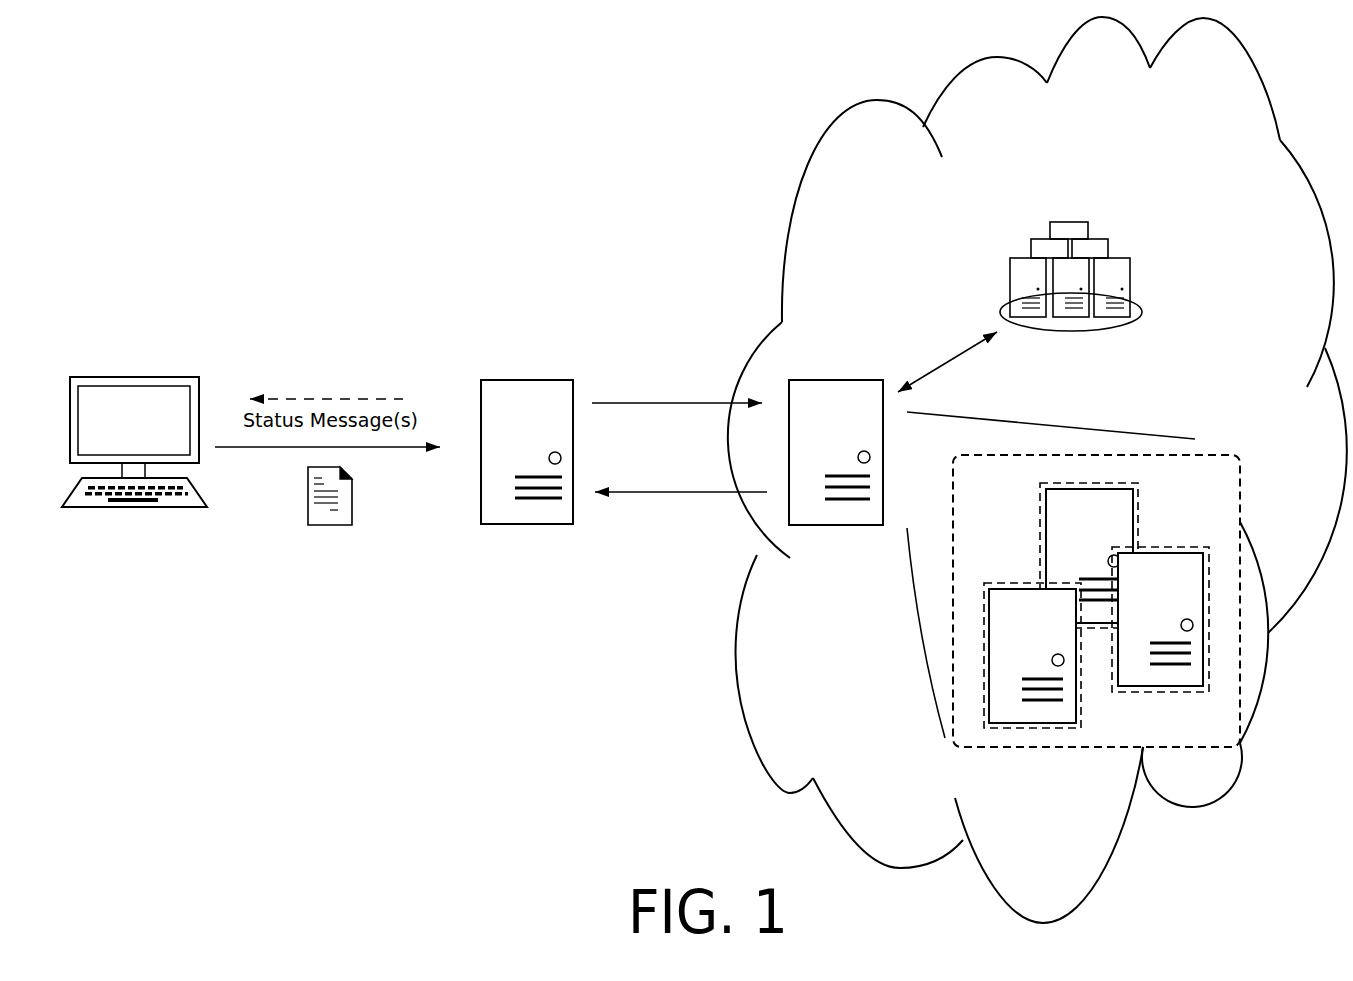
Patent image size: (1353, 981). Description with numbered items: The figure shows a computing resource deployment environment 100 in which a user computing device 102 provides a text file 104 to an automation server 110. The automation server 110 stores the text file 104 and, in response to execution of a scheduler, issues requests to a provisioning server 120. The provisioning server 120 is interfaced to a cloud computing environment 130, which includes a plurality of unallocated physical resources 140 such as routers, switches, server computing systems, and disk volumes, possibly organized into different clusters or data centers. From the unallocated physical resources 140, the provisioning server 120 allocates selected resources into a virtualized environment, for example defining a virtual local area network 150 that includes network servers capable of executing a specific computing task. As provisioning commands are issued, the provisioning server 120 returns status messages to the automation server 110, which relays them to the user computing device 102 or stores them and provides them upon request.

The environment 100 is at (1283, 872).
The user computing device 102 is at (165, 383).
The text file 104 is at (345, 522).
The automation server 110 is at (548, 522).
The provisioning server 120 is at (860, 526).
The cloud computing environment 130 is at (1107, 142).
The unallocated physical resources 140 is at (1223, 453).
The virtual local area network (VLAN) 150 is at (1110, 257).